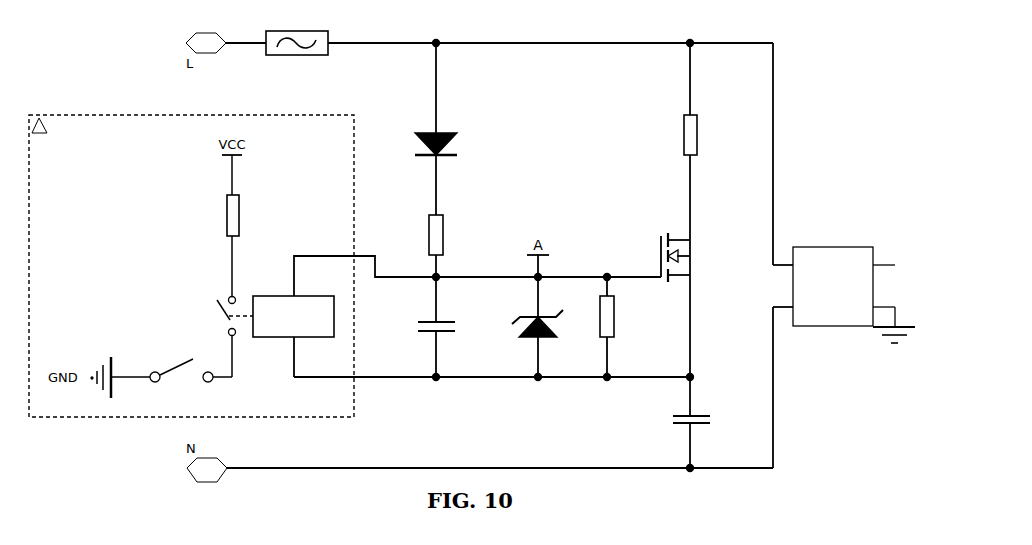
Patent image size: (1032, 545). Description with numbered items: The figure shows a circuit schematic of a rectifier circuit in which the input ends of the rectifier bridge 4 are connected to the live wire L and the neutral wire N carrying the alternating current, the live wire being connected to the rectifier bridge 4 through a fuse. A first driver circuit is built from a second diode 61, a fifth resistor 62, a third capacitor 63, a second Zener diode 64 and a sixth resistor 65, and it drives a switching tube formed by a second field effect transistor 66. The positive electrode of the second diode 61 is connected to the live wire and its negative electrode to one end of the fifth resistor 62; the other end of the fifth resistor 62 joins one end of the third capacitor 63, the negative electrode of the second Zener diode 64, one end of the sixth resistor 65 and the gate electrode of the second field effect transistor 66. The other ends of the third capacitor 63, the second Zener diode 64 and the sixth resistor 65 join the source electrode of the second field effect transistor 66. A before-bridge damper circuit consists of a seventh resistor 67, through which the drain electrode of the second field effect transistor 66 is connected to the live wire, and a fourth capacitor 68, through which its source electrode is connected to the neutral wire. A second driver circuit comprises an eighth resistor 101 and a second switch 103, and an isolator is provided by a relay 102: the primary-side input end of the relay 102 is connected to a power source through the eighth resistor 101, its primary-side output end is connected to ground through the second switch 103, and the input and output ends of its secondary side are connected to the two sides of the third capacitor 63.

The rectifier bridge 4 is at (829, 246).
The second diode 61 is at (449, 144).
The fifth resistor 62 is at (449, 235).
The third capacitor 63 is at (449, 327).
The second Zener diode 64 is at (546, 323).
The sixth resistor 65 is at (619, 316).
The second field effect transistor 66 is at (689, 257).
The seventh resistor 67 is at (702, 135).
The fourth capacitor 68 is at (705, 422).
The eighth resistor 101 is at (246, 215).
The relay 102 is at (275, 316).
The second switch 103 is at (171, 379).